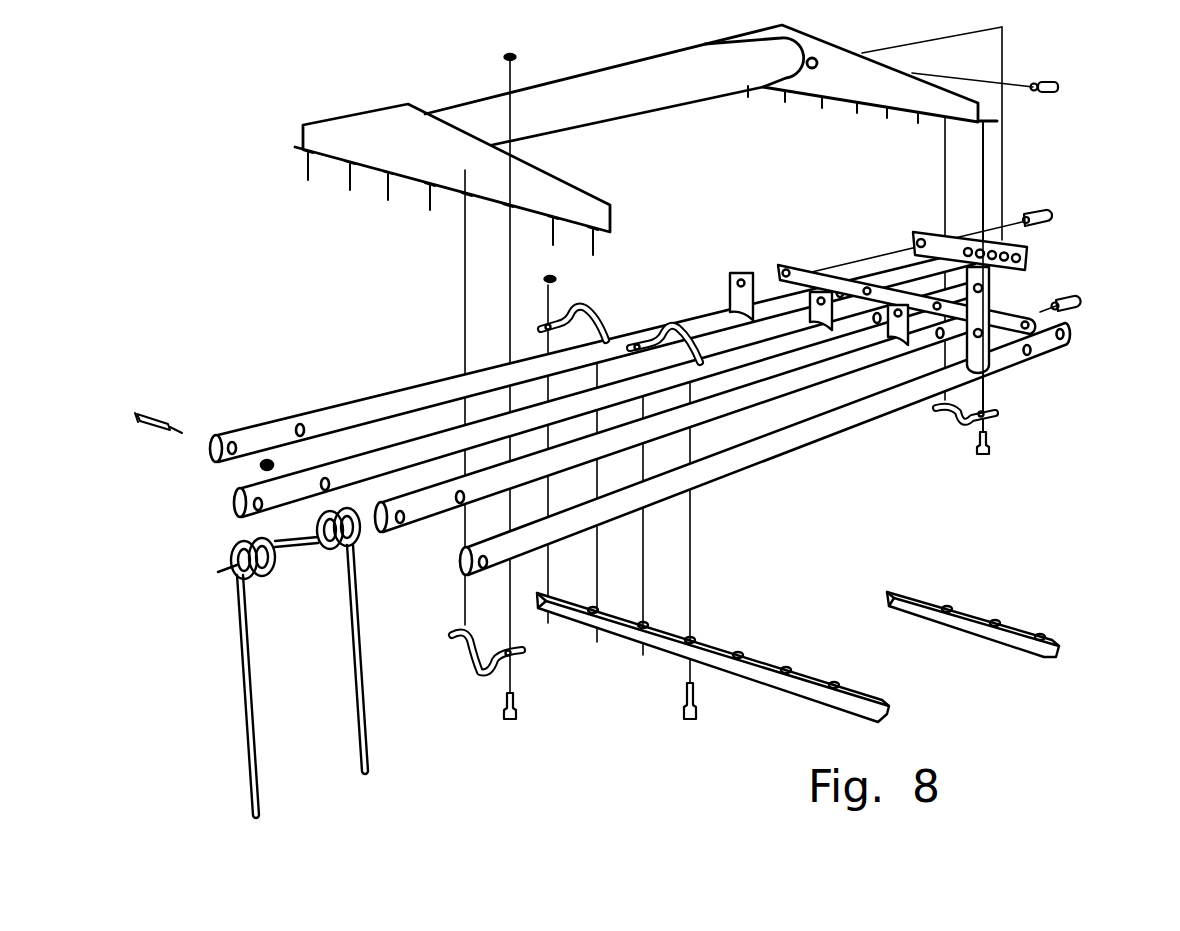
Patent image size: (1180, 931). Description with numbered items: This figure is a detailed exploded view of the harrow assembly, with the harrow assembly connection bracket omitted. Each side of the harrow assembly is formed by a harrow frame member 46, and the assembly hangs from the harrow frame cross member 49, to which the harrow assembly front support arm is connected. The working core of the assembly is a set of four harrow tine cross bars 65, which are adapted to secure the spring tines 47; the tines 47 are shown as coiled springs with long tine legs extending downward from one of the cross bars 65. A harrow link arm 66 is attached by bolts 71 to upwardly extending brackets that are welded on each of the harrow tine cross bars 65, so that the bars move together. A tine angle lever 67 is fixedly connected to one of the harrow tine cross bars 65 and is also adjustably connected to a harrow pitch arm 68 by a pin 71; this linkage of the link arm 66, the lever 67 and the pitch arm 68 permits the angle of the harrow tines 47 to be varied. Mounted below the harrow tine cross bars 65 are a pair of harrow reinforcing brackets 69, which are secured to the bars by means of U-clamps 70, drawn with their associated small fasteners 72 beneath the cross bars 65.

The harrow frame member 46 is at (378, 105).
The spring tines 47 is at (347, 655).
The harrow frame cross member 49 is at (597, 85).
The harrow tine cross bars 65 is at (382, 448).
The harrow link arm 66 is at (792, 264).
The tine angle lever 67 is at (985, 286).
The harrow pitch arm 68 is at (1028, 250).
The harrow reinforcing brackets 69 is at (958, 625).
The U-clamps 70 is at (672, 322).
The bolts 71 is at (1038, 210).
The screws 72 is at (518, 705).